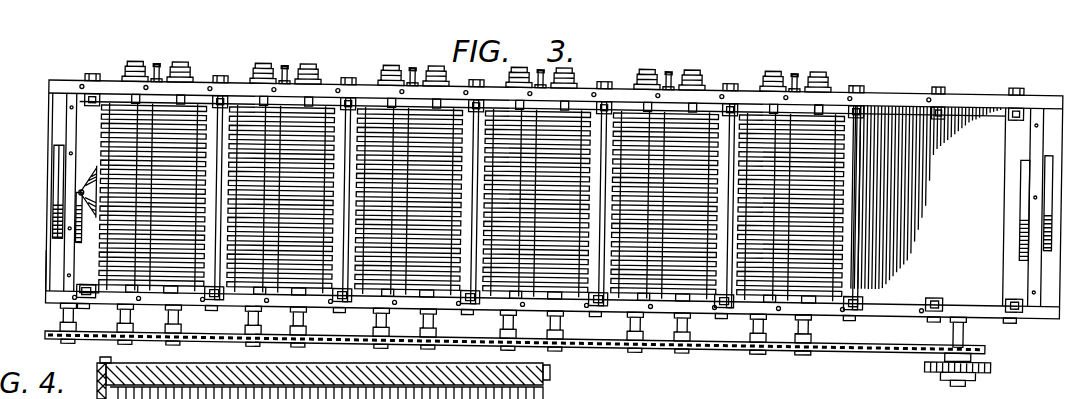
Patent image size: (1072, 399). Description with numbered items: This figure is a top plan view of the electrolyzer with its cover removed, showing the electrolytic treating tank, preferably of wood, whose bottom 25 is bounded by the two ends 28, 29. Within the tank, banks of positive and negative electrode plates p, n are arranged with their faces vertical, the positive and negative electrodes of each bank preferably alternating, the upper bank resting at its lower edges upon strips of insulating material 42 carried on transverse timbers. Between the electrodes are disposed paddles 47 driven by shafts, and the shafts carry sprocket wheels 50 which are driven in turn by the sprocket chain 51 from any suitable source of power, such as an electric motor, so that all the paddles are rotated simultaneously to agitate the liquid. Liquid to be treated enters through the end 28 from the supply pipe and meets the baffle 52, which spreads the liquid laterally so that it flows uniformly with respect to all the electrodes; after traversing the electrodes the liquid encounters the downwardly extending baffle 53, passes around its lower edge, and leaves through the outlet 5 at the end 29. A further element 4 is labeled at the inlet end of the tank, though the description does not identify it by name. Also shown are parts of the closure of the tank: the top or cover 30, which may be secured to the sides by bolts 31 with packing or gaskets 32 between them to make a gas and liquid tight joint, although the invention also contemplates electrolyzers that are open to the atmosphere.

In FIG. 3, the end 28 is at (66, 117).
In FIG. 3, the baffle 52 is at (84, 186).
In FIG. 3, the rack 4 is at (57, 246).
In FIG. 3, the bottom 25 is at (50, 270).
In FIG. 3, the paddles 47 is at (635, 260).
In FIG. 3, the negative electrode plates n is at (750, 116).
In FIG. 3, the positive electrode plates p is at (830, 112).
In FIG. 3, the baffle 53 is at (964, 118).
In FIG. 3, the end 29 is at (1040, 131).
In FIG. 3, the outlet 5 is at (1050, 155).
In FIG. 3, the sprocket chain 51 is at (889, 348).
In FIG. 3, the sprocket wheels 50 is at (755, 350).
In FIG. 4, the bolts 31 is at (110, 358).
In FIG. 4, the top or cover 30 is at (548, 381).
In FIG. 4, the packing or gaskets 32 is at (92, 388).
In FIG. 4, the strips of insulating material 42 is at (552, 397).